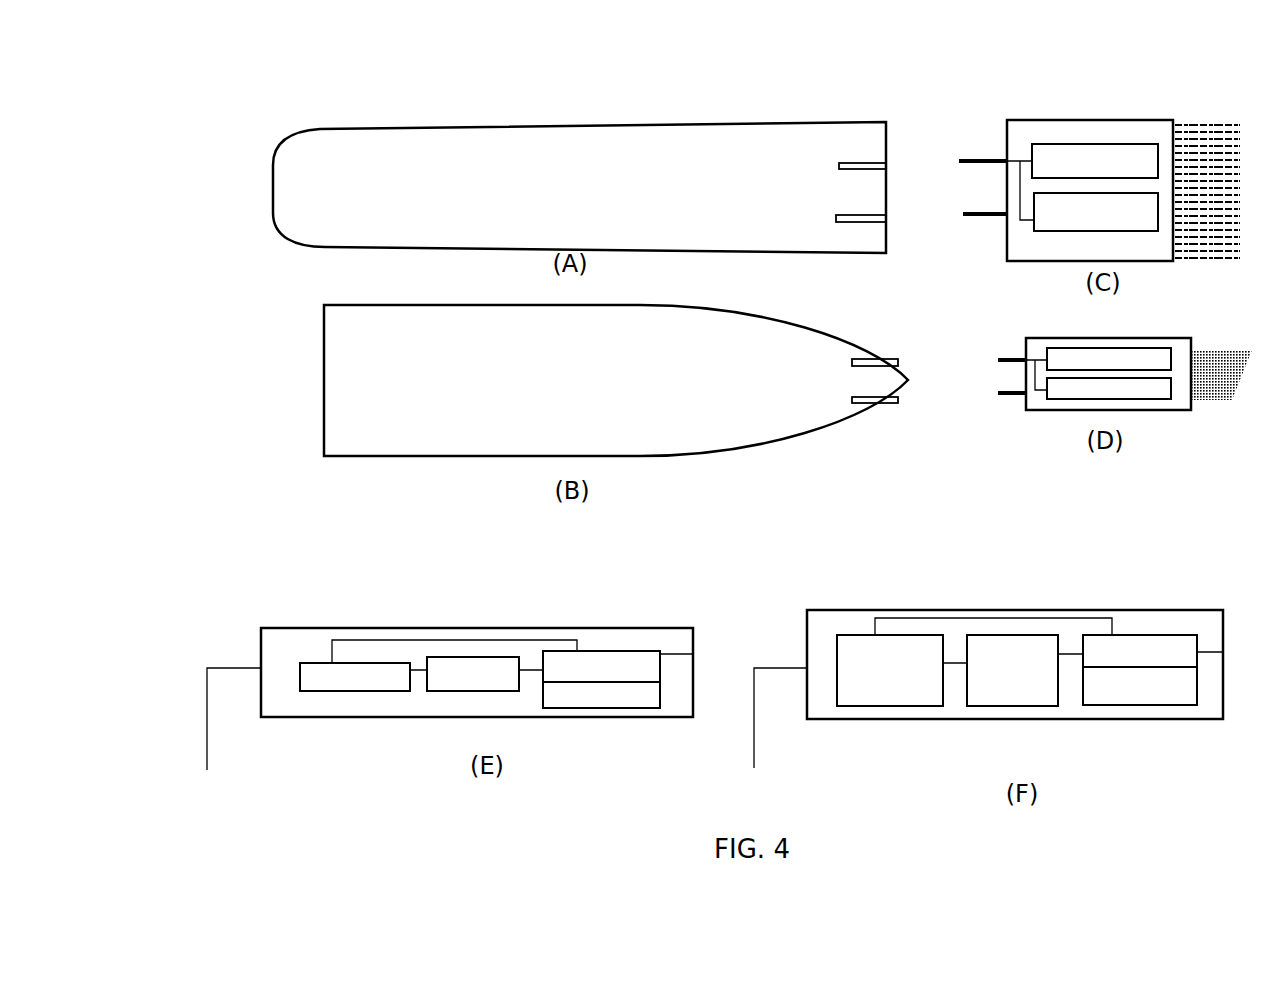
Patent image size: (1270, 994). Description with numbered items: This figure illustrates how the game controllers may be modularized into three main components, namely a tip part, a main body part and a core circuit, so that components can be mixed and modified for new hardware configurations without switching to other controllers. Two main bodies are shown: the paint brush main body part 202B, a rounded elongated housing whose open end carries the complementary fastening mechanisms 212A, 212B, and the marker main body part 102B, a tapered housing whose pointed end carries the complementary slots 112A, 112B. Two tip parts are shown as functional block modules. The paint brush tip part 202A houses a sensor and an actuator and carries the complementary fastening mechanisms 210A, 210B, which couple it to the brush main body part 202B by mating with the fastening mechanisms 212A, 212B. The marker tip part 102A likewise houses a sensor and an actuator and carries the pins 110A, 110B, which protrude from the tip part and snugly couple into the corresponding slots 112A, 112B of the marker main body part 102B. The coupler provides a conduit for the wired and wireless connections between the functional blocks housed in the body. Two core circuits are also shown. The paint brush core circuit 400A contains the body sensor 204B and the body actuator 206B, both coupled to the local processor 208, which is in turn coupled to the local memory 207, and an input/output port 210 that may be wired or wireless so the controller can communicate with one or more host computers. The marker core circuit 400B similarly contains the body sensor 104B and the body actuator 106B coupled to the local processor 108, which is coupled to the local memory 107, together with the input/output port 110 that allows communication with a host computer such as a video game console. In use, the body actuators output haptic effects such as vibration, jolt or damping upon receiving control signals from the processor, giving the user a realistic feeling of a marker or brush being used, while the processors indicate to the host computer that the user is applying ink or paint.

The main body part 202B is at (678, 138).
The fastening mechanism 212A is at (853, 163).
The fastening mechanism 212B is at (862, 223).
The main body part 102B is at (748, 422).
The slot 112A is at (867, 358).
The slot 112B is at (877, 405).
The tip part 202A is at (1143, 106).
The fastening mechanism 210A is at (985, 157).
The fastening mechanism 210B is at (985, 220).
The tip part 102A is at (1167, 321).
The pin 110A is at (1005, 357).
The pin 110B is at (998, 397).
The paint brush core circuit 400A is at (422, 613).
The body sensor 204B is at (357, 693).
The body actuator 206B is at (472, 690).
The local processor 208 is at (627, 655).
The local memory 207 is at (645, 702).
The input/output port 210 is at (205, 712).
The marker core circuit 400B is at (947, 613).
The body sensor 104B is at (887, 686).
The body actuator 106B is at (1000, 688).
The local processor 108 is at (1153, 642).
The local memory 107 is at (1170, 700).
The input/output port 110 is at (753, 718).